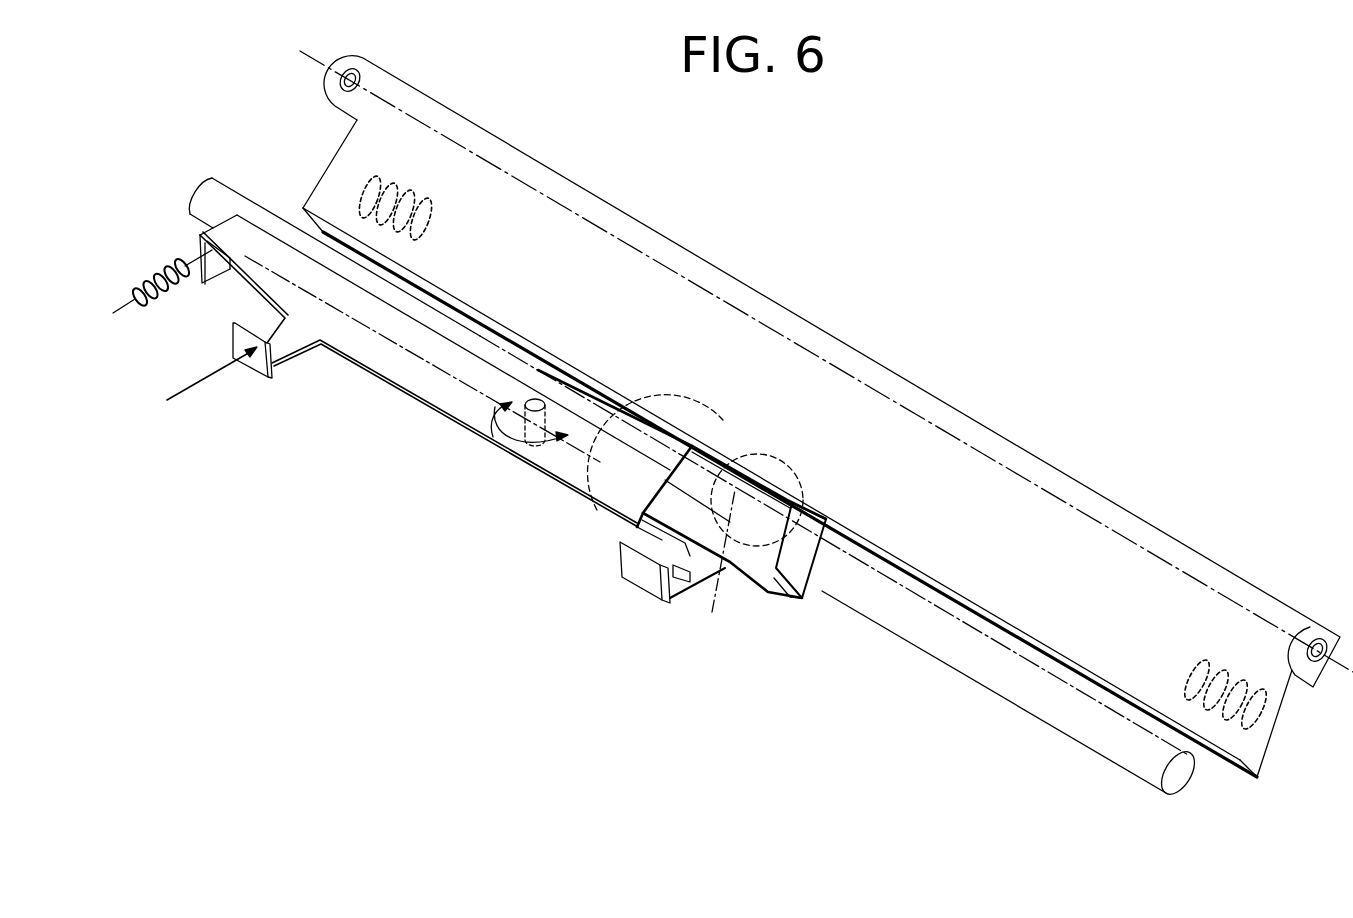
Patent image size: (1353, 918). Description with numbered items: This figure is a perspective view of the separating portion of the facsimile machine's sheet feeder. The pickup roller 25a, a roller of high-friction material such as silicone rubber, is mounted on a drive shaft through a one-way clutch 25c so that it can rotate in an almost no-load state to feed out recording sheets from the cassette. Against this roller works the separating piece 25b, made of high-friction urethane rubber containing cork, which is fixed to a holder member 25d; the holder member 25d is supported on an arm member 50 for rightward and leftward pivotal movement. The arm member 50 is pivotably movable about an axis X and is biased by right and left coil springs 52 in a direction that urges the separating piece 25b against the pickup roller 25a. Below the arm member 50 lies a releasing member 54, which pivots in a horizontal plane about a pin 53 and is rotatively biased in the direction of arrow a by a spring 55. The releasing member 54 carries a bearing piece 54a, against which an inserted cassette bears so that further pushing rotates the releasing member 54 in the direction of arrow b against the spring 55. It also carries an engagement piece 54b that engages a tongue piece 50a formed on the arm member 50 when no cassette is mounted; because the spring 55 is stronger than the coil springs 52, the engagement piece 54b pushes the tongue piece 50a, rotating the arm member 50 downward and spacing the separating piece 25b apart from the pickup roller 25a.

The arm member 50 is at (1133, 563).
The tongue piece 50a is at (672, 584).
The coil spring 52 is at (372, 178).
The pin 53 is at (500, 447).
The releasing member 54 is at (400, 370).
The bearing piece 54a is at (257, 373).
The engagement piece 54b is at (630, 577).
The spring 55 is at (145, 279).
The pickup roller 25a is at (598, 495).
The separating piece 25b is at (755, 583).
The one-way clutch 25c is at (740, 548).
The holder member 25d is at (813, 563).
The axis X is at (1268, 597).